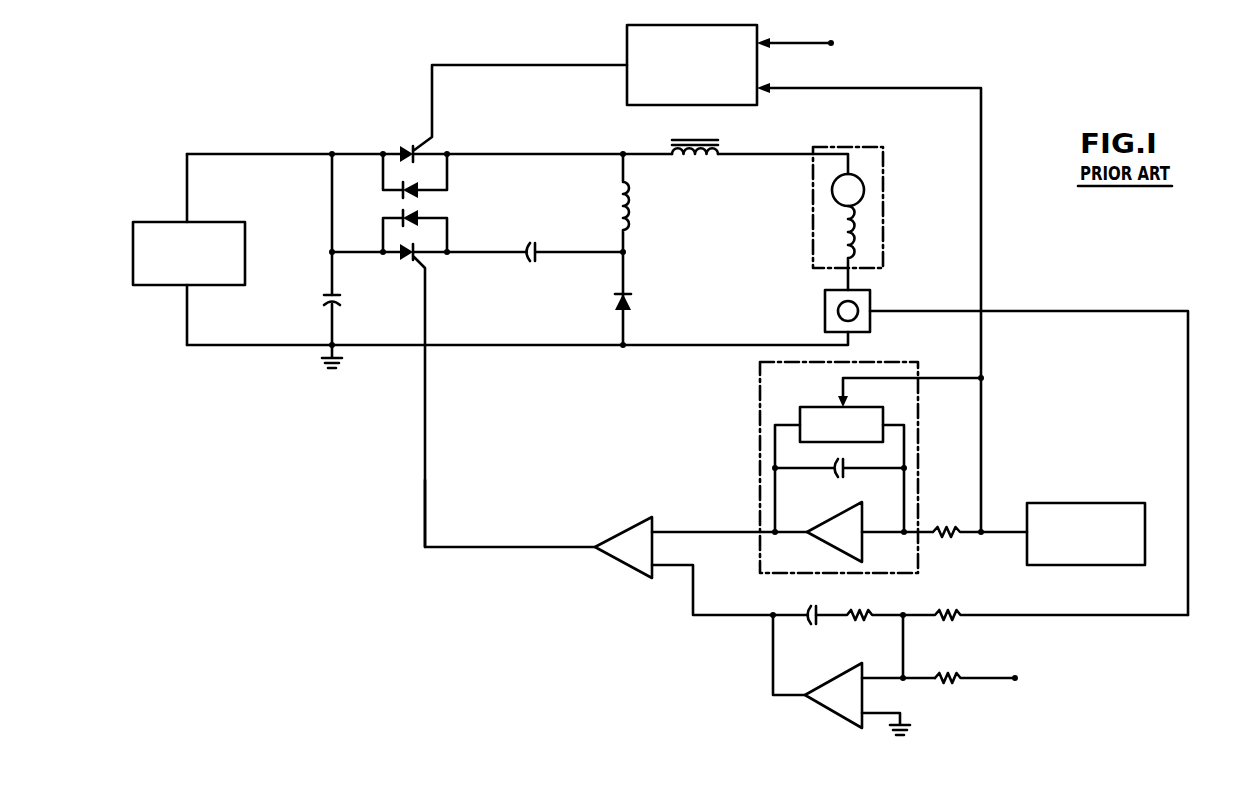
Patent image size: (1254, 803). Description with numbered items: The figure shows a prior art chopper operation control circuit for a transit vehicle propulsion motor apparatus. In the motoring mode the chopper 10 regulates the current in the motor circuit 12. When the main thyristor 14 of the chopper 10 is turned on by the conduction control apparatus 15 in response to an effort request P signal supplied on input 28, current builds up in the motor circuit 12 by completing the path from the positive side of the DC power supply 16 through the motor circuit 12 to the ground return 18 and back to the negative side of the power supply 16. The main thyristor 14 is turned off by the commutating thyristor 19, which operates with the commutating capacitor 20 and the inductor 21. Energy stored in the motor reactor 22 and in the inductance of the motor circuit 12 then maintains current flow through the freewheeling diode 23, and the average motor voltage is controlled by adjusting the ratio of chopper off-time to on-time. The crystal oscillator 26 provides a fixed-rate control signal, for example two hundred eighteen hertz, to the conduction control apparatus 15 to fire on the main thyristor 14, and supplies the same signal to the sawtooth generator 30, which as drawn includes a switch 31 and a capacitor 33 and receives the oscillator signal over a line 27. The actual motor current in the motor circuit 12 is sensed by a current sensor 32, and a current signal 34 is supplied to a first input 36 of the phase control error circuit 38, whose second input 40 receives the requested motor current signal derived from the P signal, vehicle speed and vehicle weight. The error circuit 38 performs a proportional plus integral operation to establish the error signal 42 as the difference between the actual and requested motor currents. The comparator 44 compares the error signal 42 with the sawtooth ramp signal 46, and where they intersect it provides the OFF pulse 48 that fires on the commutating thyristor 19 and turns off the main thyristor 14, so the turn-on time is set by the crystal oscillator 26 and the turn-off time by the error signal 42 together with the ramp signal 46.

The chopper 10 is at (320, 128).
The motor circuit 12 is at (813, 178).
The main thyristor 14 is at (408, 142).
The conduction control apparatus 15 is at (627, 44).
The DC power supply 16 is at (216, 222).
The ground return 18 is at (528, 345).
The commutating thyristor 19 is at (413, 258).
The commutating capacitor 20 is at (526, 239).
The inductor 21 is at (621, 205).
The motor reactor 22 is at (721, 151).
The freewheeling diode 23 is at (633, 302).
The crystal oscillator 26 is at (1113, 491).
The clock line 27 is at (981, 365).
The input 28 is at (833, 44).
The sawtooth generator 30 is at (760, 440).
The switch 31 is at (869, 395).
The current sensor 32 is at (825, 311).
The holding capacitor 33 is at (835, 480).
The current signal 34 is at (1188, 500).
The first input 36 is at (1024, 620).
The phase control error circuit 38 is at (838, 666).
The second input 40 is at (1019, 666).
The error signal 42 is at (693, 606).
The comparator 44 is at (627, 532).
The sawtooth ramp signal 46 is at (704, 518).
The OFF pulse 48 is at (425, 504).